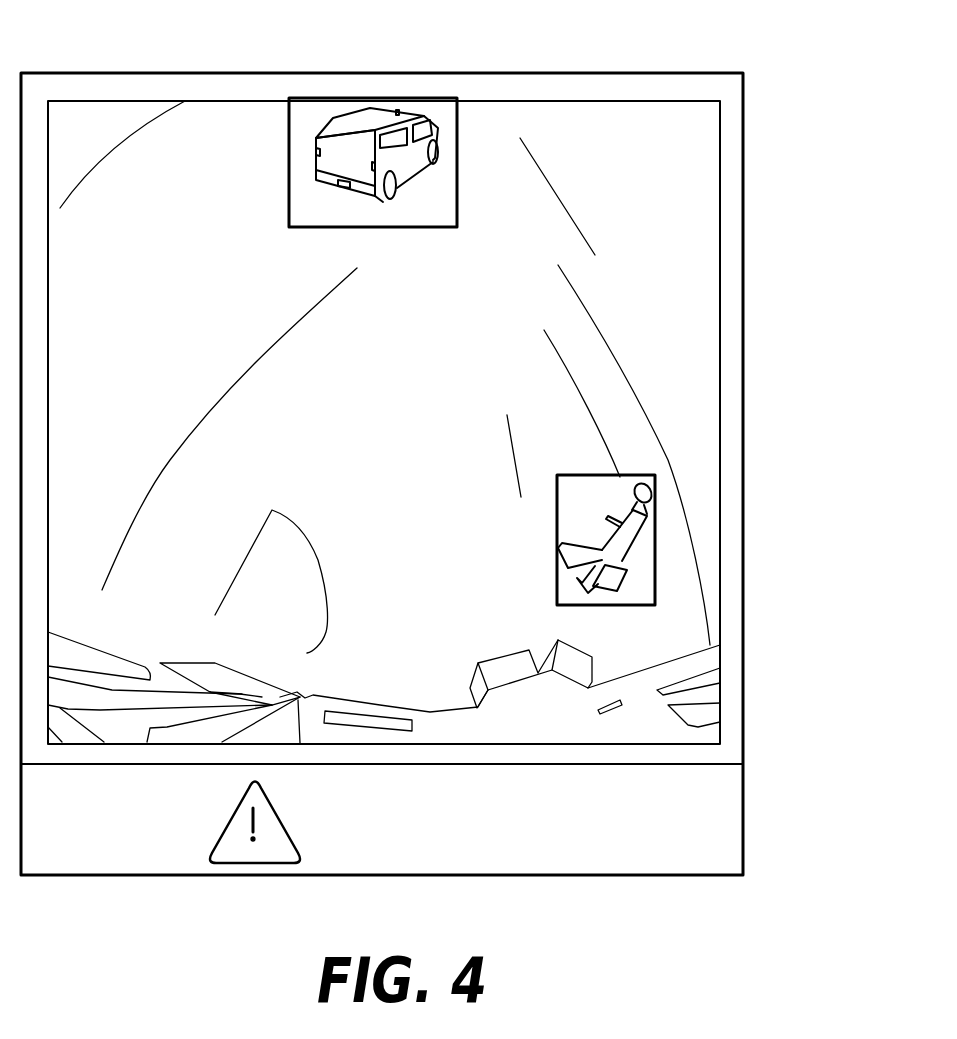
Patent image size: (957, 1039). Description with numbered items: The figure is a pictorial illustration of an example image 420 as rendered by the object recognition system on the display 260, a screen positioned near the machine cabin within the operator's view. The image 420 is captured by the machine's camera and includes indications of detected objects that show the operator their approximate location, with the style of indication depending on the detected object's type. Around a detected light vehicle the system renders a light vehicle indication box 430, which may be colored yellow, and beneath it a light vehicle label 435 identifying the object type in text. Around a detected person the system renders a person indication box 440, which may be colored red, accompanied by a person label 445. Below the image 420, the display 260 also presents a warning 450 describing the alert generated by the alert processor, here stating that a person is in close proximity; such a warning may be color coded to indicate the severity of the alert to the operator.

The display 260 is at (669, 72).
The image 420 is at (163, 100).
The light vehicle indication box 430 is at (457, 156).
The light vehicle label 435 is at (460, 252).
The person indication box 440 is at (655, 518).
The person label 445 is at (655, 624).
The warning 450 is at (666, 808).